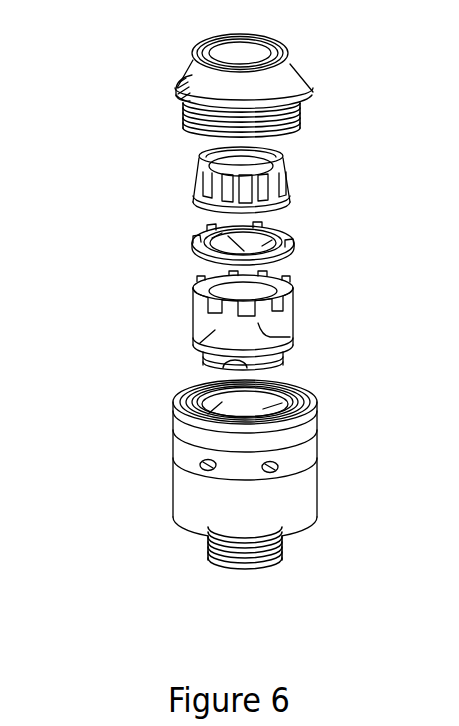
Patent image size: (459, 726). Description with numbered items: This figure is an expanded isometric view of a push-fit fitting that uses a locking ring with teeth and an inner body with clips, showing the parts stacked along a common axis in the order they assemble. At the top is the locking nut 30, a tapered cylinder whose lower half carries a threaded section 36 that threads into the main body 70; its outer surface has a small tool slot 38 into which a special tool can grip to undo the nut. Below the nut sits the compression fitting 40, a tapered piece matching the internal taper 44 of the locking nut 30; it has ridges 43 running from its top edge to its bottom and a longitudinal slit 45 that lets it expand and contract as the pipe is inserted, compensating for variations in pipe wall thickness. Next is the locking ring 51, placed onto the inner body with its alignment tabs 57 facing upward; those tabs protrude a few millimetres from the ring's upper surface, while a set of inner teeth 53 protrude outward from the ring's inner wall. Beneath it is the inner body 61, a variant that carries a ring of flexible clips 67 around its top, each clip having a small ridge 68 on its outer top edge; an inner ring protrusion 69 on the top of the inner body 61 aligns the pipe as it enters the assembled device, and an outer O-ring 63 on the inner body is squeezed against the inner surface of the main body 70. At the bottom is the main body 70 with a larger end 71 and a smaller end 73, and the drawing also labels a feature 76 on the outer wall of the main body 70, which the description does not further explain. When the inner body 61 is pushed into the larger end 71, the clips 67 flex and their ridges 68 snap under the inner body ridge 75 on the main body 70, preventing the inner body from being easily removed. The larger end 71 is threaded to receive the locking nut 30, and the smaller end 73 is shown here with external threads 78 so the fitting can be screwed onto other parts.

The locking nut 30 is at (289, 53).
The threaded section 36 is at (317, 124).
The tool slot 38 is at (178, 90).
The compression fitting 40 is at (252, 178).
The ridges 43 is at (262, 190).
The internal taper 44 is at (200, 147).
The longitudinal slit 45 is at (197, 189).
The locking ring 51 is at (278, 234).
The inner teeth 53 is at (197, 238).
The alignment tabs 57 is at (288, 225).
The inner body 61 is at (231, 309).
The outer O-ring 63 is at (294, 355).
The clips 67 is at (290, 276).
The ridge 68 is at (291, 335).
The inner ring protrusion 69 is at (198, 289).
The larger end 71 is at (207, 372).
The main body 70 is at (253, 456).
The smaller end 73 is at (176, 538).
The inner body ridge 75 is at (308, 395).
The aperture 76 is at (201, 468).
The external threads 78 is at (286, 547).